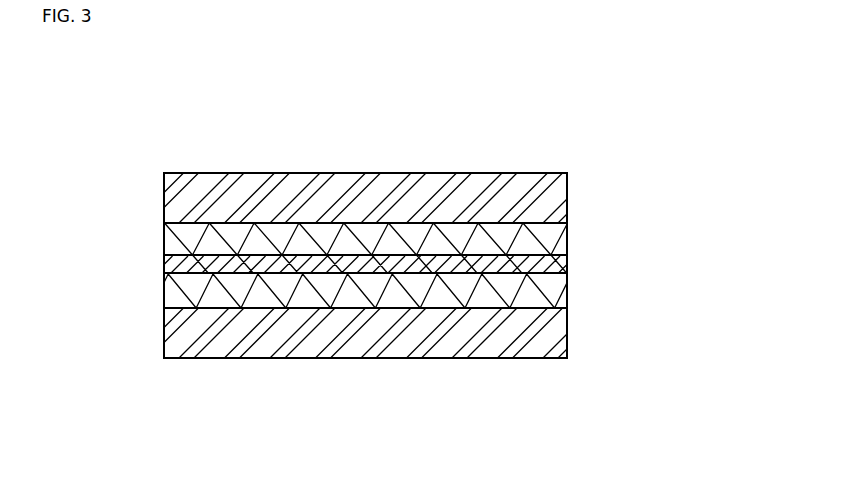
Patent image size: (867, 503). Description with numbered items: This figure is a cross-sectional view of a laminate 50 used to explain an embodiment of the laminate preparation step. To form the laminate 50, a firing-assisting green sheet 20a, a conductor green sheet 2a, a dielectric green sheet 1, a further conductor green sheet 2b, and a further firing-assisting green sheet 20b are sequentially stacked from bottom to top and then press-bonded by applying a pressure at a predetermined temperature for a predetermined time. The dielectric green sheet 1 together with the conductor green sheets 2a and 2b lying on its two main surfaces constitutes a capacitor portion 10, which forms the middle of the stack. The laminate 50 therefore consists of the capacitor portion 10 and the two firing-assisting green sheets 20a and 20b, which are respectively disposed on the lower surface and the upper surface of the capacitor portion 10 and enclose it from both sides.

The laminate 50 is at (443, 160).
The firing-assisting green sheet 20b is at (552, 182).
The conductor green sheet 2b is at (566, 224).
The dielectric green sheet 1 is at (566, 259).
The conductor green sheet 2a is at (566, 287).
The firing-assisting green sheet 20a is at (566, 338).
The capacitor portion 10 is at (708, 172).